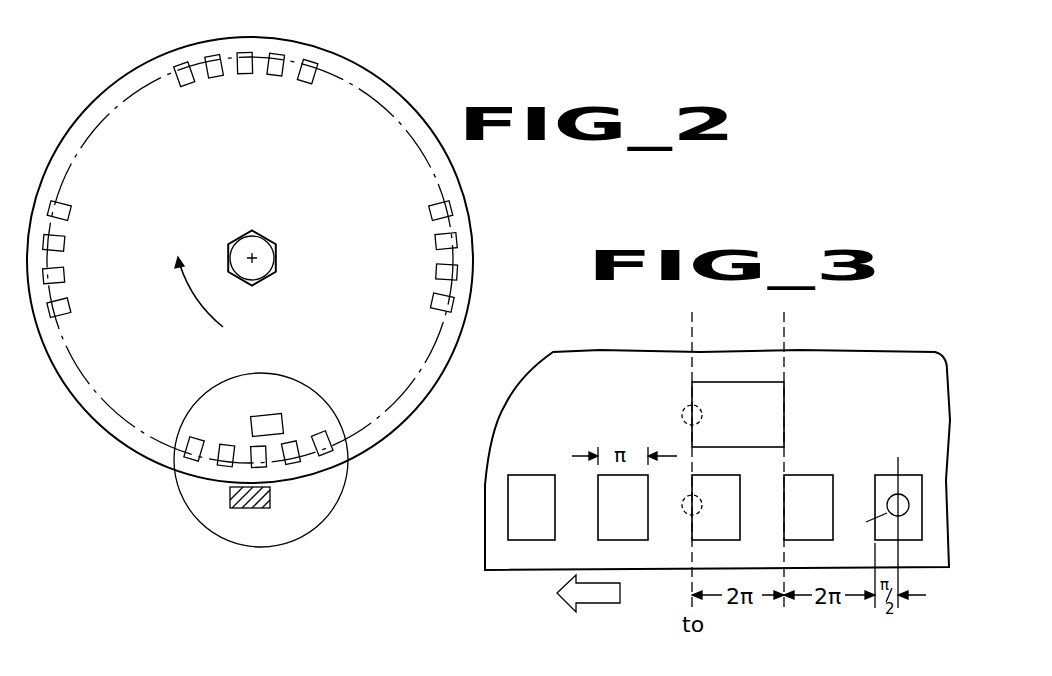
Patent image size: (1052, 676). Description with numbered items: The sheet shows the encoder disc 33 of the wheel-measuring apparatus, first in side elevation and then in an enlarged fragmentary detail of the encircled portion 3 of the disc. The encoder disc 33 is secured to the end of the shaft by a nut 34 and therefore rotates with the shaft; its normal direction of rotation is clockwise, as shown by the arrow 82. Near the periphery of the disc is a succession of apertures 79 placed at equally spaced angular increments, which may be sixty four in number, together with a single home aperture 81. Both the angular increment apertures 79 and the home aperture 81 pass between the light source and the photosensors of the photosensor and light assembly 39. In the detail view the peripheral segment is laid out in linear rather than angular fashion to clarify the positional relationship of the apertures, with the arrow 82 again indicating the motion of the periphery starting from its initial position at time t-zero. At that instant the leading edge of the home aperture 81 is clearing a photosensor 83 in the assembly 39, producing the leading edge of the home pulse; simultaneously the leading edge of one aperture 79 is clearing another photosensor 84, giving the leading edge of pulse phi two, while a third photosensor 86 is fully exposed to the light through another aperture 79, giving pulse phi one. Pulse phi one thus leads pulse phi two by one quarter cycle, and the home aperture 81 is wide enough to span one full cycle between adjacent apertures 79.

In FIG. 2, the encircled portion 3 is at (196, 517).
In FIG. 2, the encoder disc 33 is at (366, 70).
In FIG. 3, the encoder disc 33 is at (604, 358).
In FIG. 2, the nut 34 is at (262, 240).
In FIG. 2, the photosensor and light assembly 39 is at (272, 499).
In FIG. 2, the apertures 79 is at (250, 67).
In FIG. 3, the apertures 79 is at (598, 517).
In FIG. 2, the home aperture 81 is at (262, 416).
In FIG. 3, the home aperture 81 is at (782, 398).
In FIG. 2, the arrow 82 is at (188, 297).
In FIG. 3, the arrow 82 is at (583, 605).
In FIG. 3, the photosensor 83 is at (715, 420).
In FIG. 3, the photosensor 84 is at (716, 508).
In FIG. 3, the third photosensor 86 is at (886, 503).